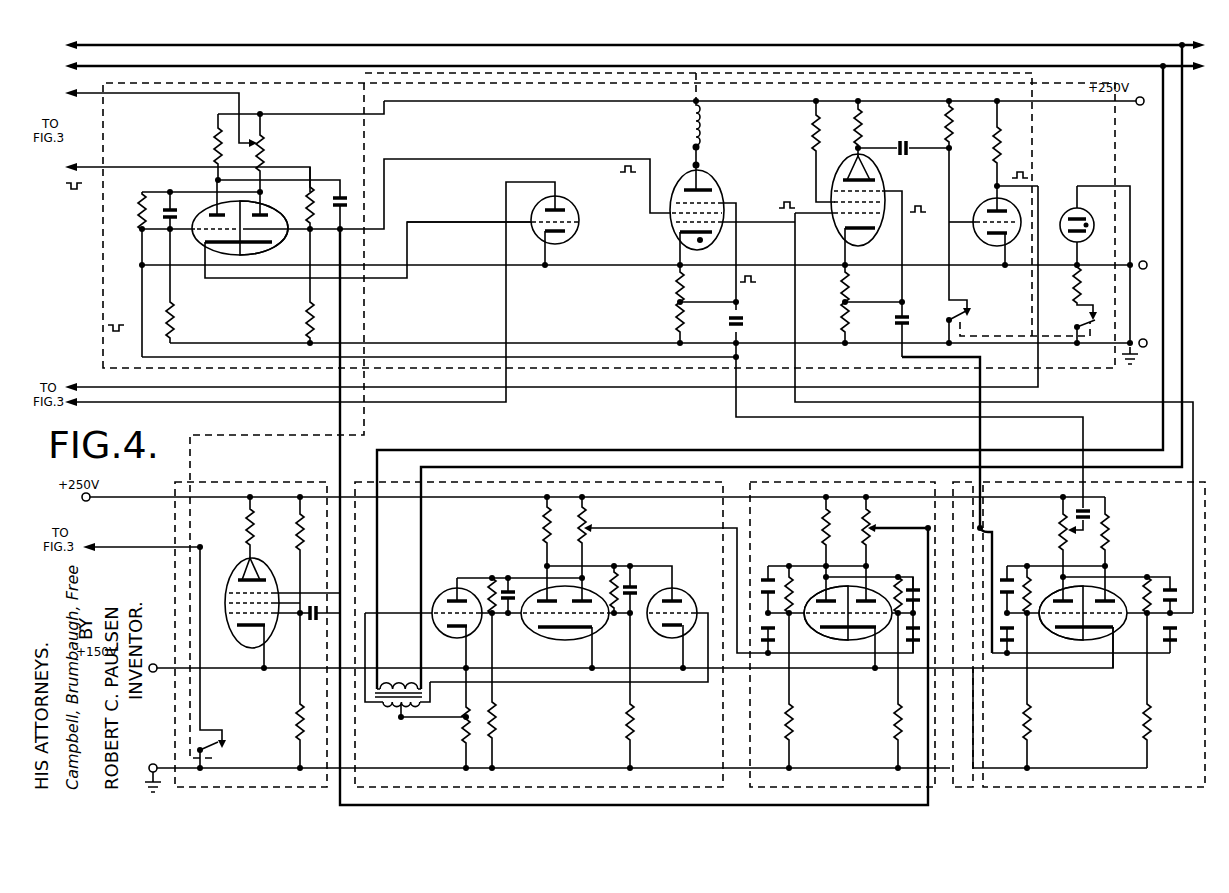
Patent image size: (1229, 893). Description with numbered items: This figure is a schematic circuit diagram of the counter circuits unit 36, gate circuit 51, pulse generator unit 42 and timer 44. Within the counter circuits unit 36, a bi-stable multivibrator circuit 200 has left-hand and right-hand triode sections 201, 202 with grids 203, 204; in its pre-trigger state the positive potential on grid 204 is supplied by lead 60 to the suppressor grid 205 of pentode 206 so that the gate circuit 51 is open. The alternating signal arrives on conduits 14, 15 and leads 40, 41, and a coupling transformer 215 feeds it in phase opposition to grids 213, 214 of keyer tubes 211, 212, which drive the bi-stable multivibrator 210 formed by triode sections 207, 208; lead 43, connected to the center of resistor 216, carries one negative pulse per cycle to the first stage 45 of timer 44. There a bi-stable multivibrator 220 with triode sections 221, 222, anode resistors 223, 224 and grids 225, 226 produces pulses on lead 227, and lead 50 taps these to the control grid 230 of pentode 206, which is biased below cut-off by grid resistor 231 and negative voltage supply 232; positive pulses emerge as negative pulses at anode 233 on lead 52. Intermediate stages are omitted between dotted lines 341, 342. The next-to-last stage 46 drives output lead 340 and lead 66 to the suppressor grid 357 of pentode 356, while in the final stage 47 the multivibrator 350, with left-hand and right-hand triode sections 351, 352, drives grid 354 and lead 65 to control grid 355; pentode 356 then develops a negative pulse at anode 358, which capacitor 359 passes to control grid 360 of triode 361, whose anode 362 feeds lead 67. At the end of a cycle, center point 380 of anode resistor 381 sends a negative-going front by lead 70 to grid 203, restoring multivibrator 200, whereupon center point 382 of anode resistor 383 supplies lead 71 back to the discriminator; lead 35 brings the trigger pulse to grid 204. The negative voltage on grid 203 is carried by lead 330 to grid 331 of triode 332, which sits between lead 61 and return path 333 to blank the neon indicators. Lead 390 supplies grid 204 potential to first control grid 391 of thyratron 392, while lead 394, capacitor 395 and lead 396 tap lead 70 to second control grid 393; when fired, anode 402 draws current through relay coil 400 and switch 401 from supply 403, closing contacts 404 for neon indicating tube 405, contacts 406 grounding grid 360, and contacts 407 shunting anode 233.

The conduit 14 is at (111, 46).
The conduit 15 is at (102, 67).
The lead 71 is at (86, 93).
The lead 35 is at (119, 167).
The counter circuits unit 36 is at (104, 262).
The anode resistor 383 is at (266, 132).
The center point 382 is at (233, 147).
The grid 203 is at (208, 226).
The grid 204 is at (295, 255).
The left-hand triode section 201 is at (204, 244).
The right-hand triode section 202 is at (240, 254).
The bi-stable multivibrator circuit 200 is at (350, 240).
The lead 67 is at (207, 387).
The lead 61 is at (187, 402).
The lead 60 is at (340, 418).
The lead 390 is at (384, 193).
The lead 330 is at (462, 222).
The grid 331 is at (564, 221).
The triode 332 is at (577, 233).
The return path 333 is at (563, 266).
The relay coil 400 is at (690, 125).
The supply of anode voltage 403 is at (715, 103).
The single-pole, single-throw switch 401 is at (699, 155).
The anode 402 is at (680, 166).
The thyratron 392 is at (732, 233).
The second control grid 393 is at (723, 202).
The first control grid 391 is at (738, 223).
The lead 396 is at (742, 247).
The capacitor 395 is at (747, 321).
The lead 394 is at (740, 355).
The lead 70 is at (592, 343).
The anode 358 is at (816, 135).
The capacitor 359 is at (926, 130).
The suppressor grid 357 is at (845, 200).
The pentode 356 is at (861, 255).
The control grid 355 is at (845, 218).
The anode 362 is at (996, 156).
The control grid 360 is at (984, 247).
The triode 361 is at (997, 244).
The neon indicating tube 405 is at (1068, 218).
The second set of contacts 406 is at (962, 318).
The first set of contacts 404 is at (1070, 313).
The lead 41 is at (1163, 145).
The lead 40 is at (1182, 154).
The pulse generator unit 42 is at (537, 482).
The timer 44 is at (803, 482).
The f/2048 stage 46 is at (964, 482).
The lead 66 is at (980, 438).
The f/4096 stage 47 is at (1140, 482).
The gate circuit 51 is at (241, 482).
The lead 52 is at (128, 547).
The anode 233 is at (245, 560).
The suppressor grid 205 is at (271, 596).
The control grid 230 is at (235, 620).
The pentode 206 is at (245, 650).
The third set of contacts 407 is at (222, 742).
The grid resistor 231 is at (297, 717).
The negative voltage supply 232 is at (262, 766).
The grid 213 is at (432, 608).
The keyer tube 211 is at (446, 598).
The left-hand triode section 207 is at (582, 582).
The right-hand triode section 208 is at (590, 633).
The bi-stable multivibrator 210 is at (560, 682).
The grid 214 is at (661, 646).
The keyer tube 212 is at (675, 617).
The resistor 216 is at (590, 516).
The lead 43 is at (722, 530).
The coupling transformer 215 is at (384, 716).
The lead 50 is at (573, 805).
The anode resistor 223 is at (826, 535).
The anode resistor 224 is at (870, 522).
The lead 227 is at (882, 530).
The f/2 stage 45 is at (809, 562).
The grid 225 is at (822, 619).
The grid 226 is at (885, 609).
The triode section 221 is at (820, 640).
The bi-stable multivibrator 220 is at (843, 640).
The triode section 222 is at (878, 645).
The dotted line 341 is at (932, 795).
The dotted line 342 is at (963, 775).
The anode resistor 381 is at (1058, 520).
The center point 380 is at (1084, 549).
The output lead 340 is at (985, 535).
The grid 354 is at (1110, 612).
The left-hand triode section 351 is at (1060, 645).
The multivibrator 350 is at (1086, 646).
The right-hand triode section 352 is at (1125, 660).
The lead 65 is at (1205, 526).